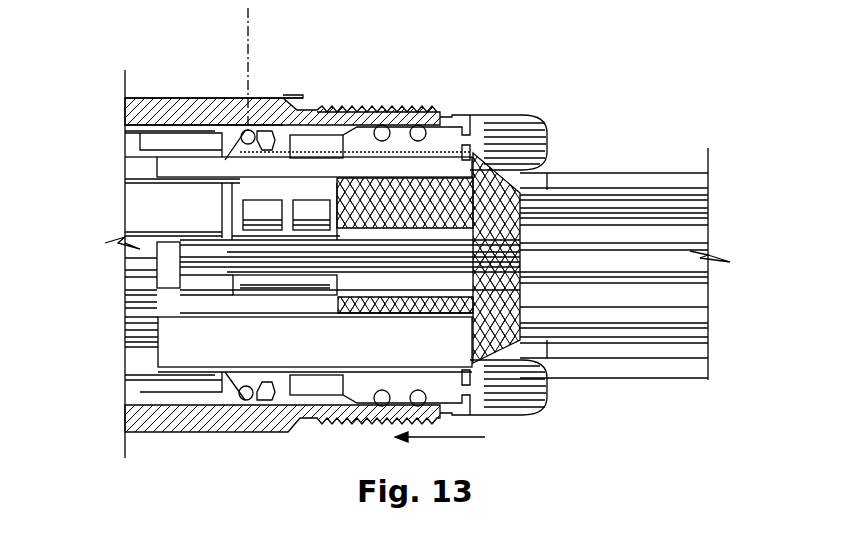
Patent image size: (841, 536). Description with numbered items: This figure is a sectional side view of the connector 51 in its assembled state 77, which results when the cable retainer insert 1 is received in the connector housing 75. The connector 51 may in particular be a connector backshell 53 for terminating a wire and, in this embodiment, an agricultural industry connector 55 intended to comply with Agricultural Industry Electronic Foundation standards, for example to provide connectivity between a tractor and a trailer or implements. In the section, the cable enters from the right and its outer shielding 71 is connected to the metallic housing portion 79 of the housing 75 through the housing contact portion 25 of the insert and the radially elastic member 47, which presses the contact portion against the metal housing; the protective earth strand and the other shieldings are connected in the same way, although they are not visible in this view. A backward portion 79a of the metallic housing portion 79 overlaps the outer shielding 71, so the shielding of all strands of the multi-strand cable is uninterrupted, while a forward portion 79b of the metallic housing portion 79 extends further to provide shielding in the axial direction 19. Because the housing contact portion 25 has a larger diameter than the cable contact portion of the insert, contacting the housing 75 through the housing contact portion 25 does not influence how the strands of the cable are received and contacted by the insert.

The cable retainer insert 1 is at (550, 148).
The axial direction 19 is at (485, 437).
The housing contact portion 25 is at (268, 148).
The radially elastic member 47 is at (247, 132).
The connector 51 is at (543, 98).
The connector backshell 53 is at (297, 418).
The agricultural industry connector 55 is at (298, 164).
The assembled state 77 is at (298, 342).
The outer shielding 71 is at (522, 305).
The connector housing 75 is at (268, 90).
The metallic housing portion 79 is at (138, 98).
The backward portion 79a is at (375, 110).
The forward portion 79b is at (173, 90).